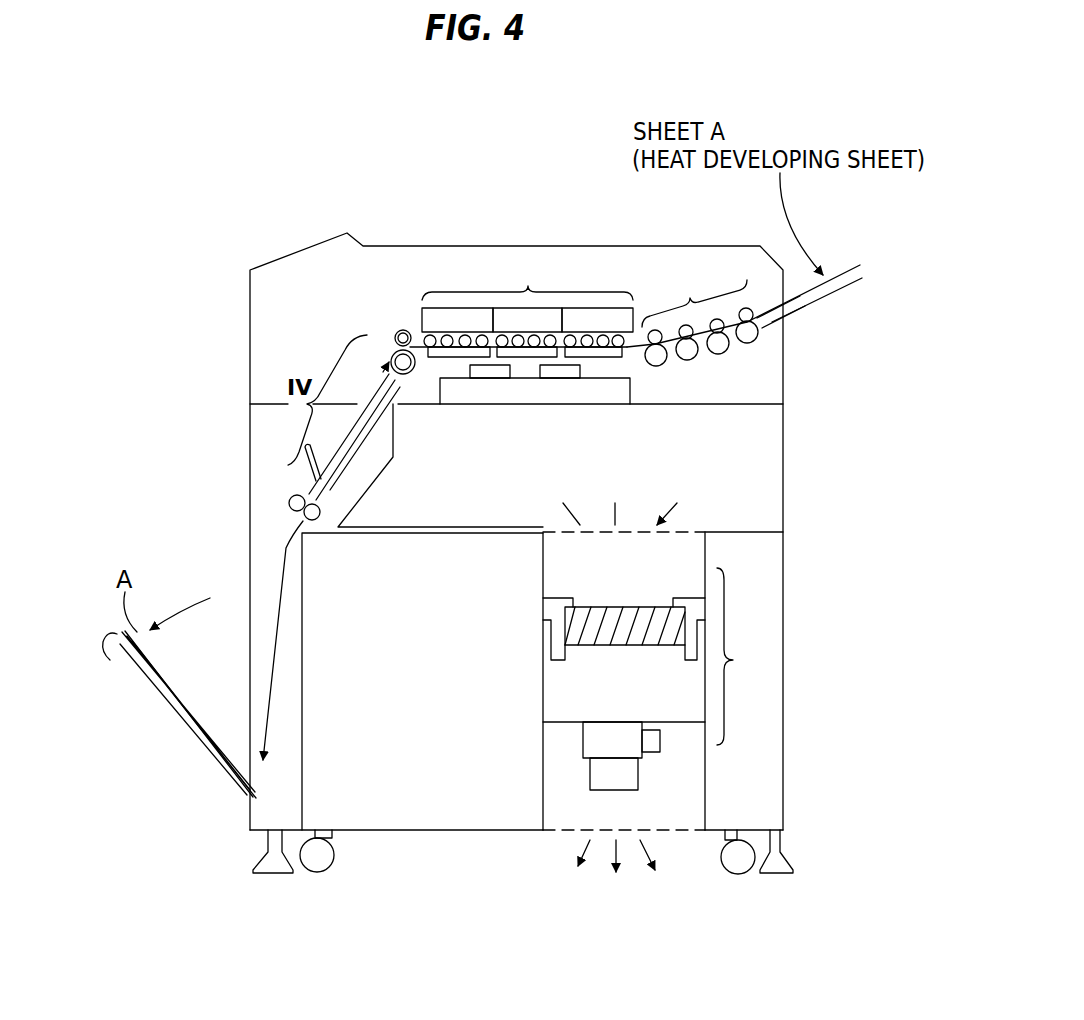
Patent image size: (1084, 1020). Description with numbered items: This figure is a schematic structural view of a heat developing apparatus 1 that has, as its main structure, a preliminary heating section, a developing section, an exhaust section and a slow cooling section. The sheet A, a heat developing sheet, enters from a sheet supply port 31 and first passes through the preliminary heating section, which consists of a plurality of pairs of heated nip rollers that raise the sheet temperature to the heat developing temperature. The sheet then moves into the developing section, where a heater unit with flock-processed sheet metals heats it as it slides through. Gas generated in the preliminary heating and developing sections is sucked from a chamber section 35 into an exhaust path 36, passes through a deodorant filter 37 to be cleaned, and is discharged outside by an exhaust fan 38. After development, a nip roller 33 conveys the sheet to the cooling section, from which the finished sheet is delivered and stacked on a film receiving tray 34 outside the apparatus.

The heat developing apparatus 1 is at (235, 255).
The sheet supply port 31 is at (757, 304).
The nip roller 33 is at (402, 328).
The film receiving tray 34 is at (236, 590).
The chamber section 35 is at (477, 451).
The exhaust path 36 is at (543, 683).
The deodorant filter 37 is at (650, 600).
The exhaust fan 38 is at (638, 775).